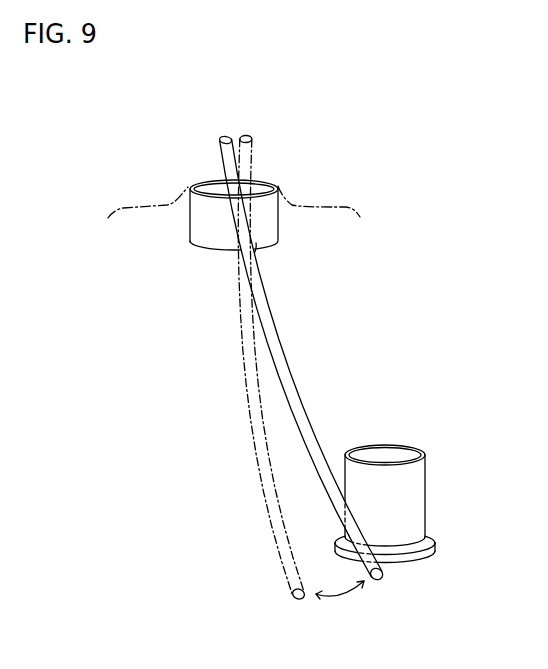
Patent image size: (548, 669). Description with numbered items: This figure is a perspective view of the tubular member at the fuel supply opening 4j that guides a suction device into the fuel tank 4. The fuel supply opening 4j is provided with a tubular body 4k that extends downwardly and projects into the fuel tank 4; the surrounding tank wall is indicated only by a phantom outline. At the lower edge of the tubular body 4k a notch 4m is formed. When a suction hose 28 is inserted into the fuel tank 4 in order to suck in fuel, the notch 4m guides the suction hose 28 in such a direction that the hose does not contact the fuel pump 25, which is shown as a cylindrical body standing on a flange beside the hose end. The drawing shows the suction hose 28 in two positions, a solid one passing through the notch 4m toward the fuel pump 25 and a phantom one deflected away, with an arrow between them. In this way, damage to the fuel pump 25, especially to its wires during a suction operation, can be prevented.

The fuel tank 4 is at (318, 207).
The fuel supply opening 4j is at (203, 170).
The tubular body 4k is at (190, 226).
The notch 4m is at (253, 248).
The fuel pump 25 is at (425, 488).
The suction hose 28 is at (242, 343).